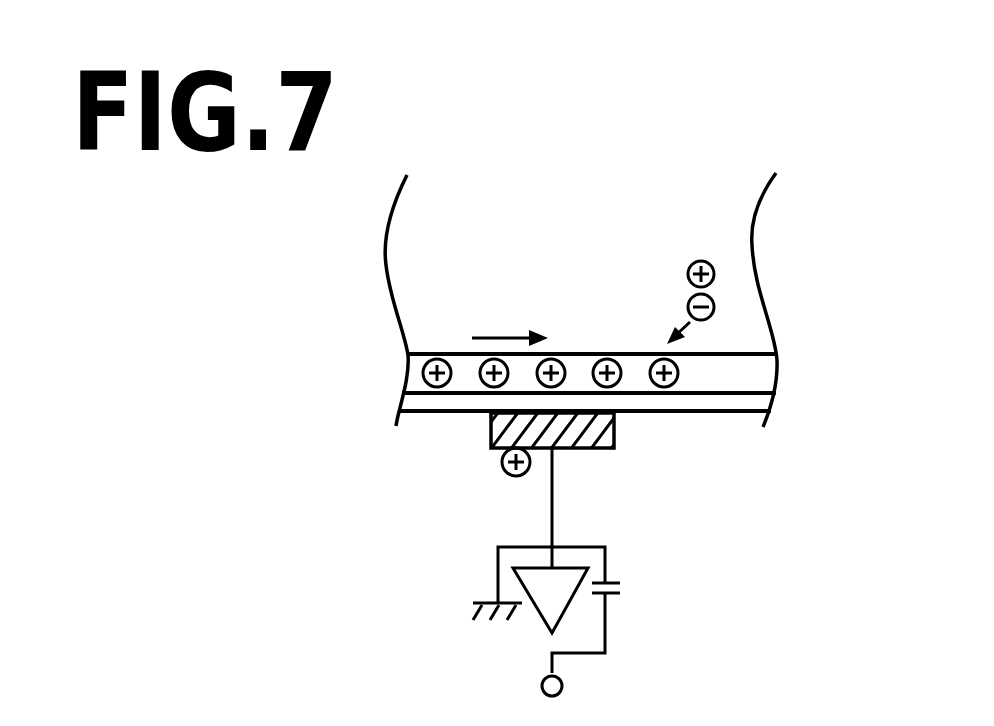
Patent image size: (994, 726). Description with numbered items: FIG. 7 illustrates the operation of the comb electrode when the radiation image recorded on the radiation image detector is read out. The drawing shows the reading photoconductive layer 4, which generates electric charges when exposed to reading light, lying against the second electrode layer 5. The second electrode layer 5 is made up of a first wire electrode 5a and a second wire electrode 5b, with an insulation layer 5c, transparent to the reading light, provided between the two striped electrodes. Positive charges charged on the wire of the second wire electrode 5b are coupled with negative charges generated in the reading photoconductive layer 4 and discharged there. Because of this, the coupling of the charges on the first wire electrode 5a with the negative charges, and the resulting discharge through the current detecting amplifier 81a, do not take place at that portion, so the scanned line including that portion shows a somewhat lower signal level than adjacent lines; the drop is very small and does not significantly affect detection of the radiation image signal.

The reading photoconductive layer 4 is at (752, 283).
The second electrode layer 5 is at (243, 332).
The first wire electrode 5a is at (490, 438).
The second wire electrode 5b is at (417, 373).
The insulation layer 5c is at (415, 402).
The current detecting amplifier 81a is at (573, 575).